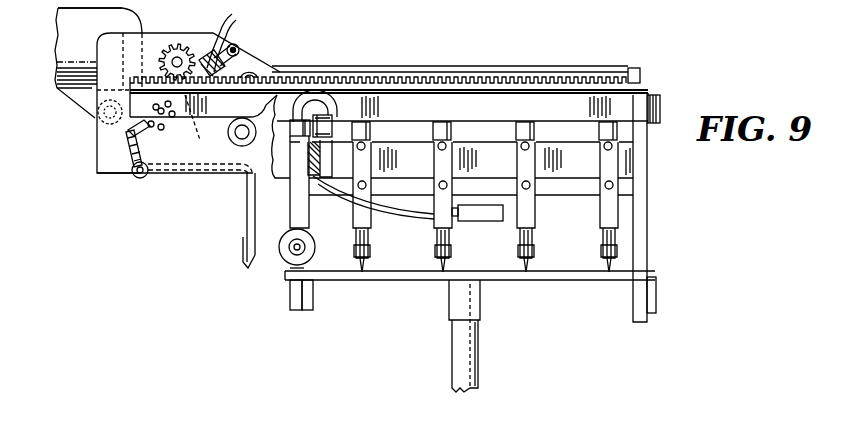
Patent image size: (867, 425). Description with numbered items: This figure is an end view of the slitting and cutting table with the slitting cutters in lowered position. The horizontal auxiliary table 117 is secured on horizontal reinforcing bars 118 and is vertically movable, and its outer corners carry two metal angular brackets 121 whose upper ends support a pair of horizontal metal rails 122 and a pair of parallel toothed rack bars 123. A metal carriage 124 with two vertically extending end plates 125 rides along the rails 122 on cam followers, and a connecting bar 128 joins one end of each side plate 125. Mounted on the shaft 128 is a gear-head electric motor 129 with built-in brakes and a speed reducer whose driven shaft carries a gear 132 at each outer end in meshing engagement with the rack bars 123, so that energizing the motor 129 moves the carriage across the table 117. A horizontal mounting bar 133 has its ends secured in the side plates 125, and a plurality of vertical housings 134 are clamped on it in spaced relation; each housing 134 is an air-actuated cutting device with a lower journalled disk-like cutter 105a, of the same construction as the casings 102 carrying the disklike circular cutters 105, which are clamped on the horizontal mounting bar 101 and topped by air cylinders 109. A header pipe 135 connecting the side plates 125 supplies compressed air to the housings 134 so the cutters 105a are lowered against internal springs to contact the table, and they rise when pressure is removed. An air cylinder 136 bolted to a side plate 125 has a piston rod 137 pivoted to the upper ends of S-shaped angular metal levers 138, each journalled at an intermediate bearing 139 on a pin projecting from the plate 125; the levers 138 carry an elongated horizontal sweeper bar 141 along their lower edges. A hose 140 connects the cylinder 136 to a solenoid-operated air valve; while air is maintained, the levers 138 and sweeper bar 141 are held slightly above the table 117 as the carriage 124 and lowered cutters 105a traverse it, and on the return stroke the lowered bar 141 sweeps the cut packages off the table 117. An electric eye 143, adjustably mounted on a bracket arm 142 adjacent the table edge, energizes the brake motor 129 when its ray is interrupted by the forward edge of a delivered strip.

The horizontal mounting bar 101 is at (483, 157).
The vertical cylindrical casing 102 is at (523, 193).
The disklike circular cutter 105 is at (600, 268).
The disk-like cutter 105a is at (315, 250).
The air cylinder 109 is at (433, 131).
The horizontal table 117 is at (557, 284).
The horizontal reinforcing bar 118 is at (290, 297).
The metal angular bracket 121 is at (648, 235).
The horizontal metal rail 122 is at (457, 108).
The toothed rack bar 123 is at (398, 77).
The metal carriage 124 is at (99, 183).
The carriage end plate 125 is at (100, 152).
The connecting bar 128 is at (100, 127).
The gear-head electric motor 129 is at (97, 29).
The gear 132 is at (162, 53).
The horizontal mounting bar 133 is at (304, 221).
The vertical housing 134 is at (304, 232).
The header pipe 135 is at (343, 107).
The air cylinder 136 is at (200, 140).
The piston rod 137 is at (141, 142).
The S-shaped angular metal lever 138 is at (198, 178).
The intermediate bearing 139 is at (140, 179).
The hose 140 is at (236, 22).
The sweeper bar 141 is at (243, 255).
The bracket arm 142 is at (407, 198).
The electric eye 143 is at (488, 214).